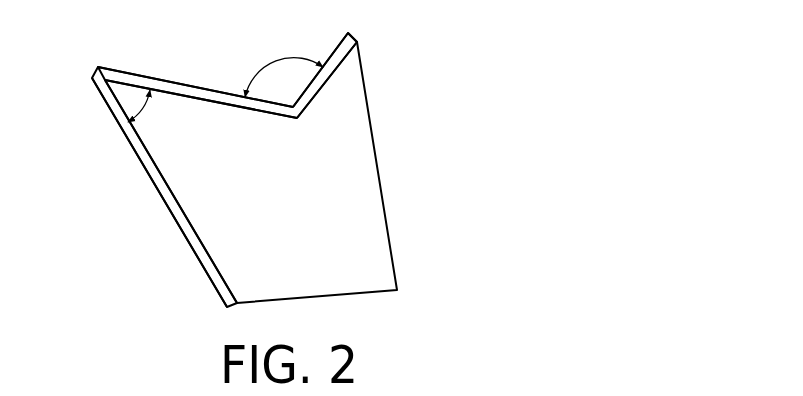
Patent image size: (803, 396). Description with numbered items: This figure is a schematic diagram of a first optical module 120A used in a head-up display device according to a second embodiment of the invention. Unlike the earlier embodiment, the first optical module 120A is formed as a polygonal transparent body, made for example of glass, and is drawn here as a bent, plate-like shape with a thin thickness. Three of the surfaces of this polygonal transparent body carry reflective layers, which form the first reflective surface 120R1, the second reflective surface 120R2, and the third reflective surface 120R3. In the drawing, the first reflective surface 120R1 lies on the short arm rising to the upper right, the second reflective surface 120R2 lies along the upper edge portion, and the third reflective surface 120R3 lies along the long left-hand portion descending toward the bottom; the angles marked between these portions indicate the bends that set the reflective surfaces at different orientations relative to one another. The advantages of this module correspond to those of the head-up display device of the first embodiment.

The first optical module 120A is at (381, 198).
The first reflective surface 120R1 is at (352, 36).
The second reflective surface 120R2 is at (180, 88).
The third reflective surface 120R3 is at (170, 202).